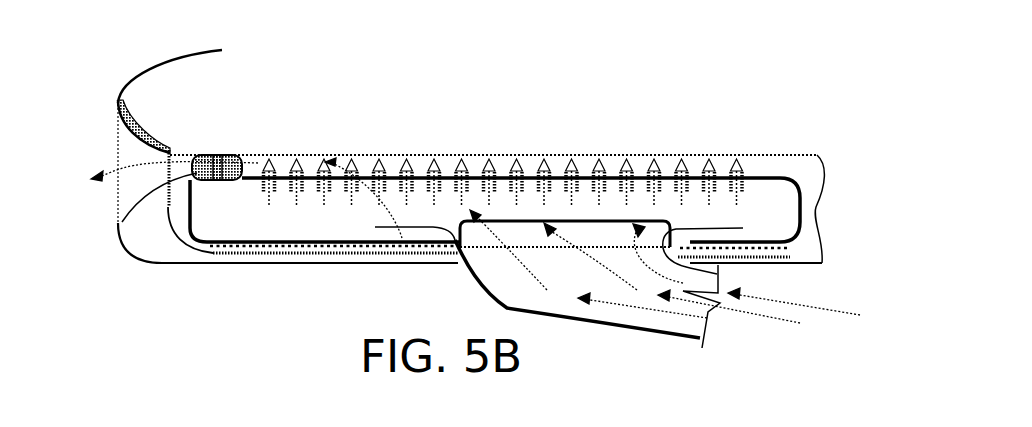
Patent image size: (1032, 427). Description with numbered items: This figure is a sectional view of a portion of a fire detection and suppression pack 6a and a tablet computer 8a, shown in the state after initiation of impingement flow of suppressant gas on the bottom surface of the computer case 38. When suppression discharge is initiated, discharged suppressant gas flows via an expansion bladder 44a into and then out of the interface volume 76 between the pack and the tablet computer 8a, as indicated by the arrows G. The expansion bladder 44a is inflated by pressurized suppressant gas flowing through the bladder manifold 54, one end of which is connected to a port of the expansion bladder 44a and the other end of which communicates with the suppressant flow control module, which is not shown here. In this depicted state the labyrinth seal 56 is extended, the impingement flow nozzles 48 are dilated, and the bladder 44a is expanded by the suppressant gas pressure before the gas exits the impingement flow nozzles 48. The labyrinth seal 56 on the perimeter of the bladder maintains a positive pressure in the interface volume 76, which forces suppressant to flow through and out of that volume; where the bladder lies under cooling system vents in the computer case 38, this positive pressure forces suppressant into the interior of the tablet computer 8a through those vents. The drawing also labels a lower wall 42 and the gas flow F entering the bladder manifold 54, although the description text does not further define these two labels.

The computer case 38 is at (170, 62).
The tablet computer 8a is at (138, 71).
The arrows G is at (143, 165).
The labyrinth seal 56 is at (192, 172).
The fire detection and suppression pack 6a is at (128, 261).
The lower shell wall 42 is at (162, 264).
The expansion bladder 44a is at (307, 245).
The interface volume 76 is at (641, 167).
The impingement flow nozzles 48 is at (745, 172).
The bladder manifold 54 is at (632, 330).
The fluid flow F is at (655, 308).